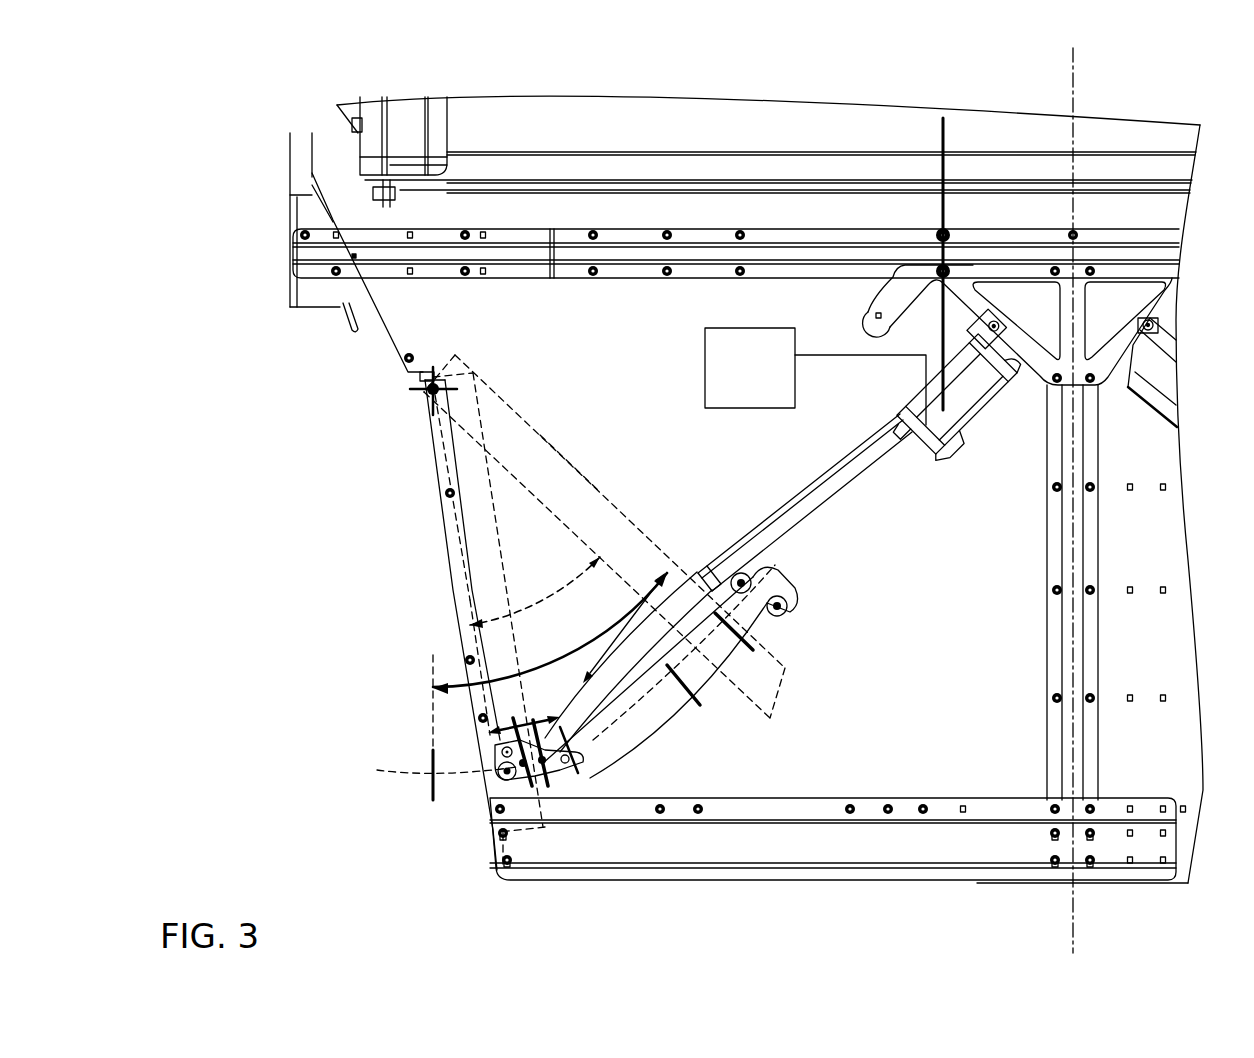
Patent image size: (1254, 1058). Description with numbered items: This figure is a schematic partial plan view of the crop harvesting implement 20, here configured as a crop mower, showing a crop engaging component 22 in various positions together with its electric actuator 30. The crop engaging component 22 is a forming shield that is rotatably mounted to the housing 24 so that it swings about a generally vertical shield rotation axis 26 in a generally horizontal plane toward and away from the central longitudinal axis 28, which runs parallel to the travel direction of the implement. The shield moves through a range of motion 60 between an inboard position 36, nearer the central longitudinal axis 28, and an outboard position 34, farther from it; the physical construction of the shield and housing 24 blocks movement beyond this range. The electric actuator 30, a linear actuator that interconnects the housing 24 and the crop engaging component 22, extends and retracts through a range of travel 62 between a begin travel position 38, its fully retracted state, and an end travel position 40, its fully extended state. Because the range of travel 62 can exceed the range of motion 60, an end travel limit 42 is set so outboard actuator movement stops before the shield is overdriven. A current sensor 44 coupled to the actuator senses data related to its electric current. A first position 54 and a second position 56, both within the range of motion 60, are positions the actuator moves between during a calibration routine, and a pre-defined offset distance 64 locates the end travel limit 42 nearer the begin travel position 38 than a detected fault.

The crop harvesting implement 20 is at (1123, 93).
The crop engaging component 22 is at (541, 436).
The housing 24 is at (822, 882).
The shield rotation axis 26 is at (432, 392).
The central longitudinal axis 28 is at (1072, 95).
The electric actuator 30 is at (957, 447).
The outboard position 34 is at (499, 530).
The inboard position 36 is at (610, 486).
The begin travel position 38 is at (755, 645).
The end travel position 40 is at (420, 790).
The end travel limit 42 is at (560, 777).
The current sensor 44 is at (735, 381).
The first position 54 is at (694, 703).
The second position 56 is at (580, 767).
The range of motion 60 is at (545, 593).
The range of travel 62 is at (450, 678).
The pre-defined offset distance 64 is at (488, 733).